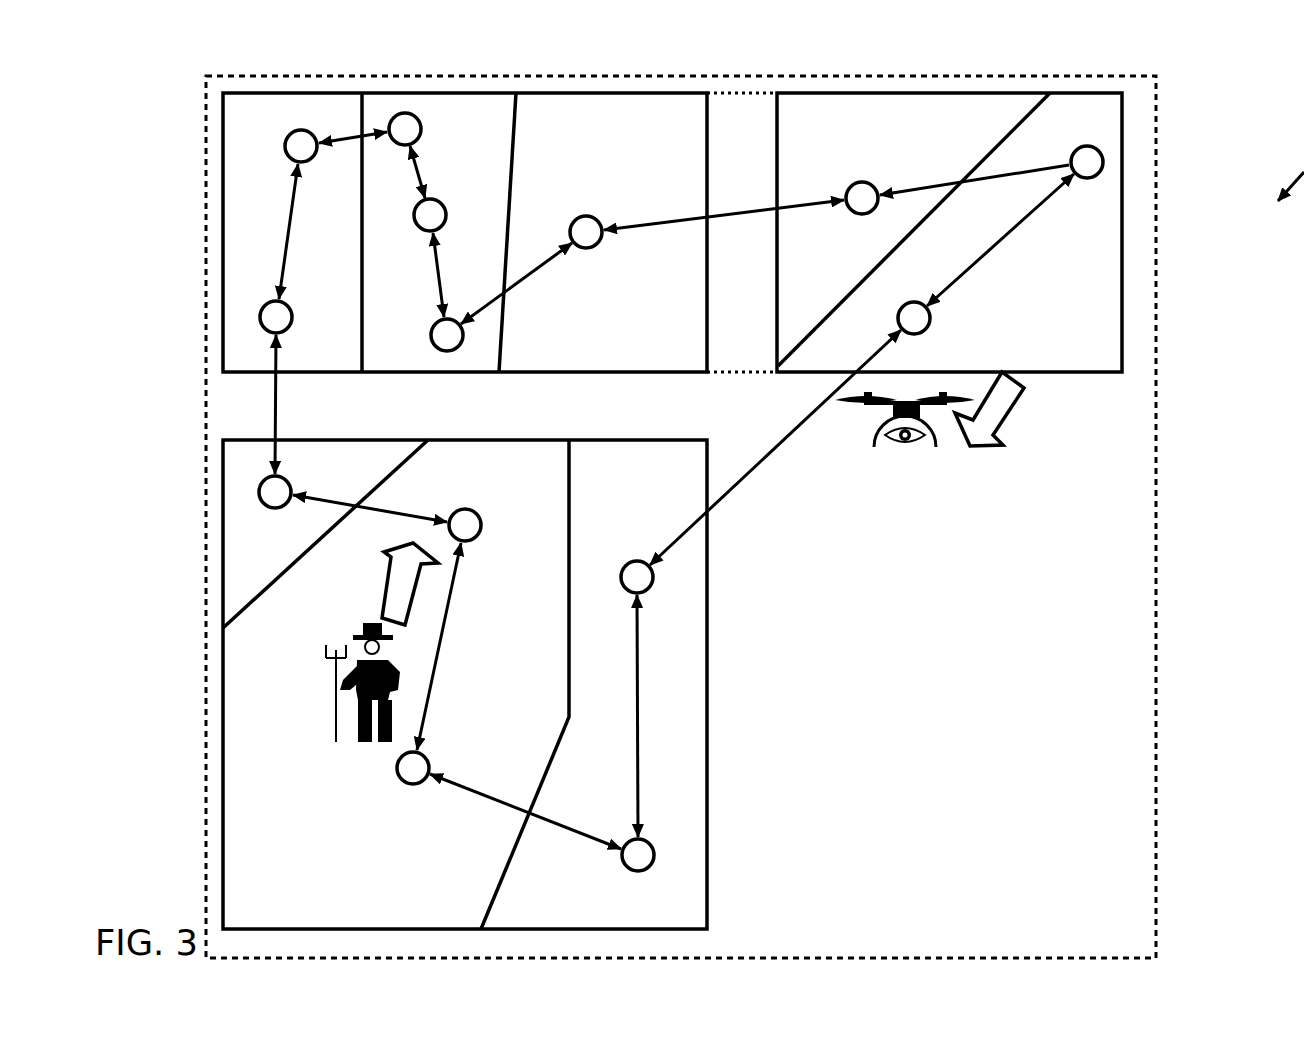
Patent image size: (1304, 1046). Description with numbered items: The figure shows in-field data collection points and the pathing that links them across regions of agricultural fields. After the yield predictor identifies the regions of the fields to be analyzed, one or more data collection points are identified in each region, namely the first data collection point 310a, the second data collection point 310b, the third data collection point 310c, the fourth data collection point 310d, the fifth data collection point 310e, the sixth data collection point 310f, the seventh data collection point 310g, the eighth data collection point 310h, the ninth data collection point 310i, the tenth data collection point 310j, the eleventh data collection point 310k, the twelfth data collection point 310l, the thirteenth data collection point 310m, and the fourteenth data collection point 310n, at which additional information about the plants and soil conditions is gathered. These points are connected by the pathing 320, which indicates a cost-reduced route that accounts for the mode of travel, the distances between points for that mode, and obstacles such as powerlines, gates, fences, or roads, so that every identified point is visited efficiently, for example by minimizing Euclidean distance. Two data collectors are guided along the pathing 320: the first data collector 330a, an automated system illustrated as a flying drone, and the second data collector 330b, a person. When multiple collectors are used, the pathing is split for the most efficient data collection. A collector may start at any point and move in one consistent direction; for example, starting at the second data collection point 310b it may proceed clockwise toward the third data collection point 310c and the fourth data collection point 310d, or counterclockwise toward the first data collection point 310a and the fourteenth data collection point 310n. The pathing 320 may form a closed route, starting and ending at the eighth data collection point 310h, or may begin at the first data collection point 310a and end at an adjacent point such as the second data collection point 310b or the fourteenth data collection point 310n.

The first data collection point 310a is at (1104, 161).
The second data collection point 310b is at (931, 320).
The third data collection point 310c is at (654, 572).
The fourth data collection point 310d is at (651, 842).
The fifth data collection point 310e is at (430, 753).
The sixth data collection point 310f is at (470, 511).
The seventh data collection point 310g is at (288, 477).
The eighth data collection point 310h is at (292, 310).
The ninth data collection point 310i is at (297, 130).
The tenth data collection point 310j is at (411, 114).
The eleventh data collection point 310k is at (444, 205).
The twelfth data collection point 310l is at (489, 300).
The thirteenth data collection point 310m is at (590, 215).
The fourteenth data collection point 310n is at (864, 181).
The pathing 320 is at (770, 450).
The first data collector 330a is at (937, 442).
The second data collector 330b is at (358, 733).